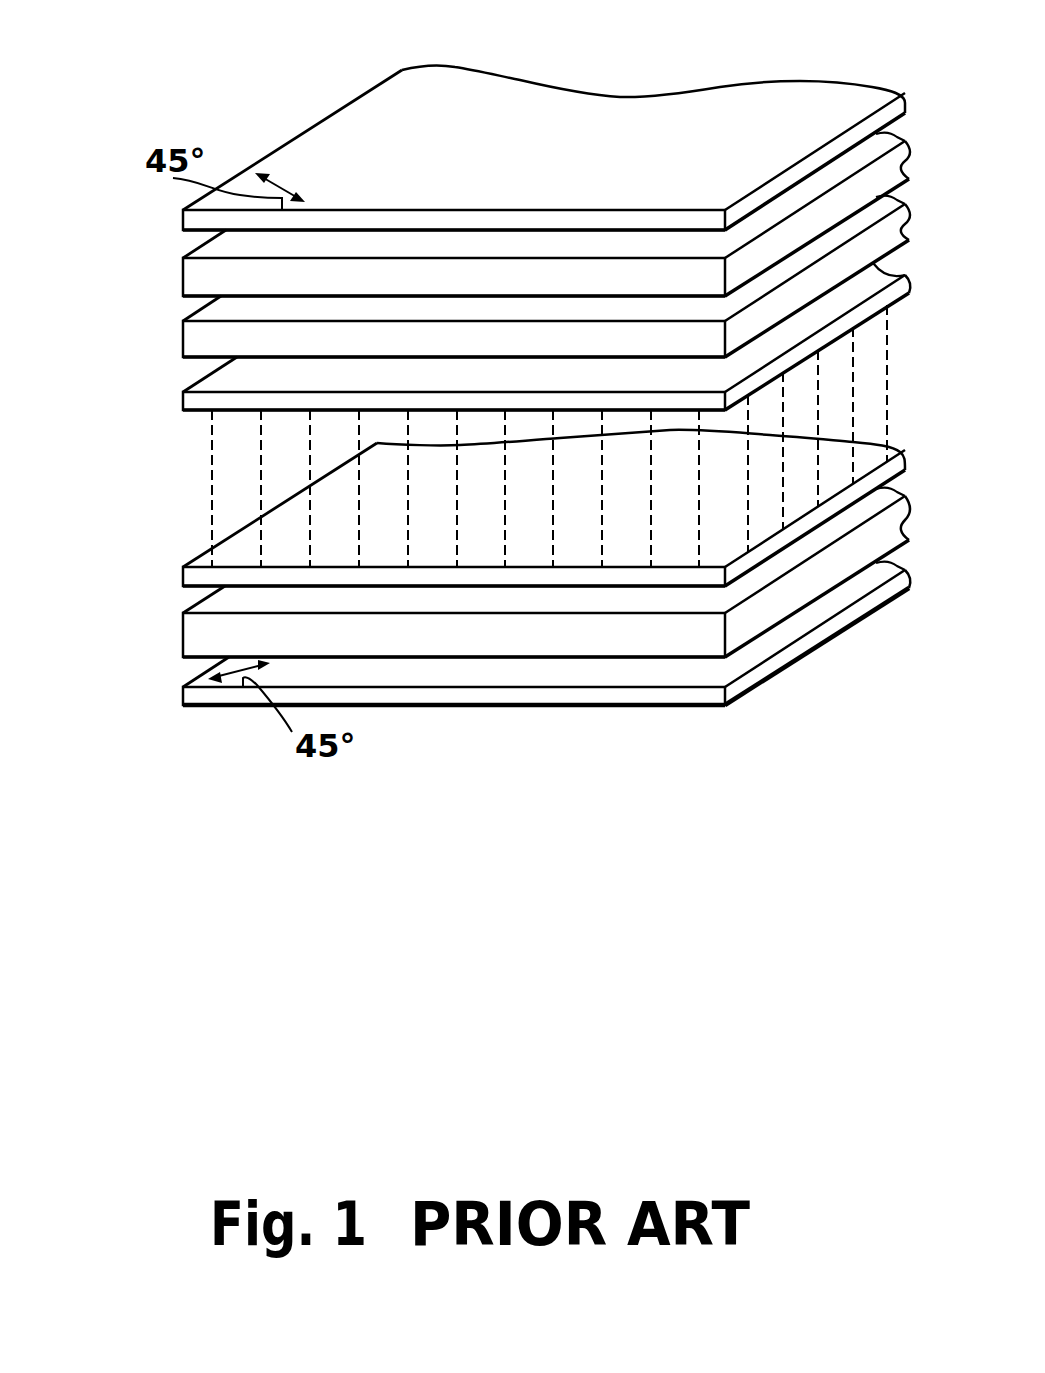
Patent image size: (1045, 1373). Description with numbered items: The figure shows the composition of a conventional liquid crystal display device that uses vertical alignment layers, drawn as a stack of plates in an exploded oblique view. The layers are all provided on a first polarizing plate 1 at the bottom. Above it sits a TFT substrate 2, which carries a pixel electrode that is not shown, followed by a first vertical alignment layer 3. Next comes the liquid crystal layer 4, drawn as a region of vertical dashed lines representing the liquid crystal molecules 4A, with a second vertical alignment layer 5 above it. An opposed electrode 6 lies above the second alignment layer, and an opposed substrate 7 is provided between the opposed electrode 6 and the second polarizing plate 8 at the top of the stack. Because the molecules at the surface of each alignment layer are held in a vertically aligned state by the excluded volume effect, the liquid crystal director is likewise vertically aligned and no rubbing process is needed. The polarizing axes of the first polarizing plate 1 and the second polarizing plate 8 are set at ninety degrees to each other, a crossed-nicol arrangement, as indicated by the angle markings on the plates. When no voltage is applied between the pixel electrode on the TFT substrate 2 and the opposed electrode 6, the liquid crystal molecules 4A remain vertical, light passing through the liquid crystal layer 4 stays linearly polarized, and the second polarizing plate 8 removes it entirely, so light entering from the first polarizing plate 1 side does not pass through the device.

The first polarizing plate 1 is at (227, 707).
The TFT substrate 2 is at (168, 644).
The first vertical alignment layer 3 is at (168, 582).
The liquid crystal layer 4 is at (183, 413).
The liquid crystal molecules 4A is at (505, 550).
The second vertical alignment layer 5 is at (202, 402).
The opposed electrode 6 is at (202, 333).
The opposed substrate 7 is at (202, 277).
The second polarizing plate 8 is at (361, 110).